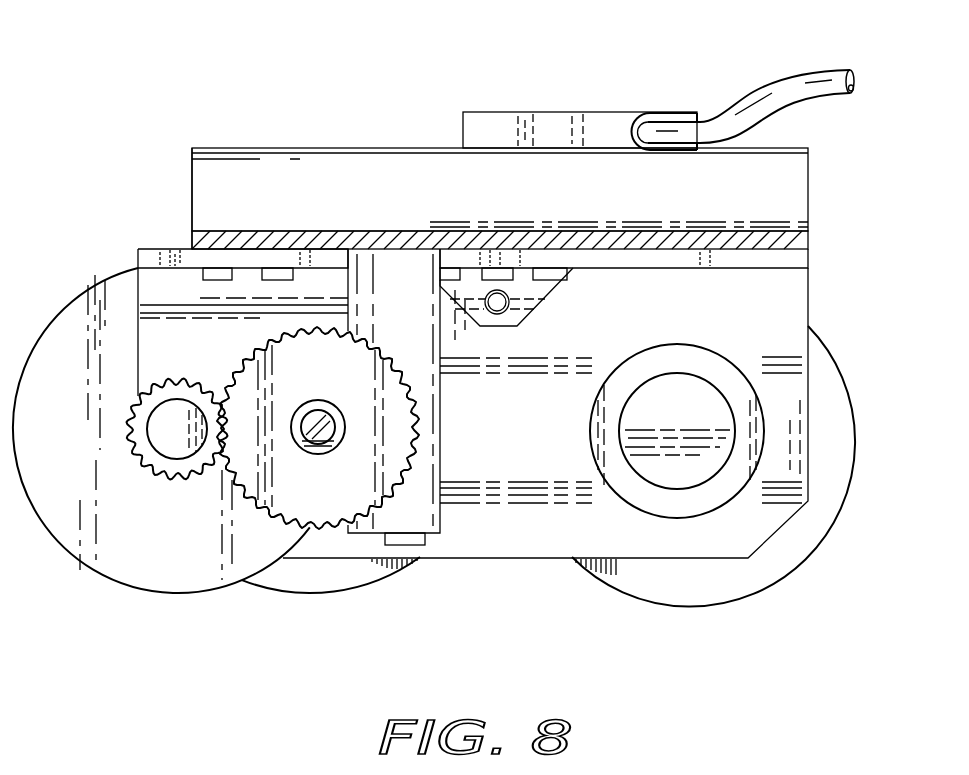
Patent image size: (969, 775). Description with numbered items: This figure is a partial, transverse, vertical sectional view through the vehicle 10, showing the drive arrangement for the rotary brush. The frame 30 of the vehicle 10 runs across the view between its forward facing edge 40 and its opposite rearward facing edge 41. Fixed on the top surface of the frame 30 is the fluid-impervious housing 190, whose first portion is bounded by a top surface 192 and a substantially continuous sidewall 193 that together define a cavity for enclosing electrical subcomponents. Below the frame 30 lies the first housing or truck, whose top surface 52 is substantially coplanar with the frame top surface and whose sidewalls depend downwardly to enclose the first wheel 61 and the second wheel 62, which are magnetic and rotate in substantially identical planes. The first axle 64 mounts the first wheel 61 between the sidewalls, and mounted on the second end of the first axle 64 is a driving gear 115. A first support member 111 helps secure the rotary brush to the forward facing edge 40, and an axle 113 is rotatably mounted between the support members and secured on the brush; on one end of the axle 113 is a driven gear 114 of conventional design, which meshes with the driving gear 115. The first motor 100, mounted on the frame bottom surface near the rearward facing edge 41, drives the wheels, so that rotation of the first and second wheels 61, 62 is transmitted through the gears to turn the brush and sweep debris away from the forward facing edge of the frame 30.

The vehicle 10 is at (256, 72).
The frame 30 is at (148, 258).
The forward facing edge 40 is at (192, 235).
The rearward facing edge 41 is at (808, 260).
The top surface 52 is at (347, 238).
The first wheel 61 is at (322, 575).
The second wheel 62 is at (684, 578).
The first axle 64 is at (330, 446).
The first motor 100 is at (681, 358).
The first support member 111 is at (212, 363).
The axle 113 is at (165, 430).
The driven gear 114 is at (183, 478).
The driving gear 115 is at (338, 384).
The housing 190 is at (315, 146).
The top surface 192 is at (388, 148).
The sidewall 193 is at (762, 184).